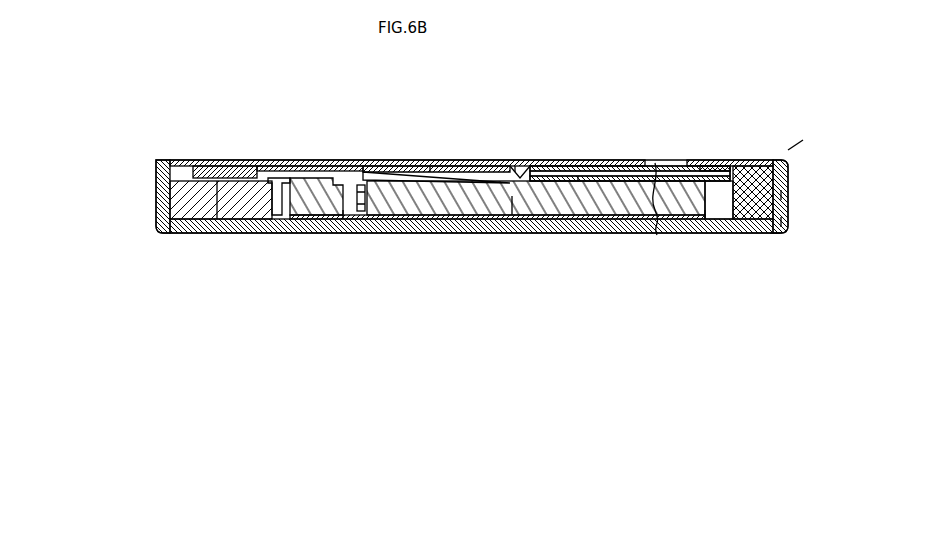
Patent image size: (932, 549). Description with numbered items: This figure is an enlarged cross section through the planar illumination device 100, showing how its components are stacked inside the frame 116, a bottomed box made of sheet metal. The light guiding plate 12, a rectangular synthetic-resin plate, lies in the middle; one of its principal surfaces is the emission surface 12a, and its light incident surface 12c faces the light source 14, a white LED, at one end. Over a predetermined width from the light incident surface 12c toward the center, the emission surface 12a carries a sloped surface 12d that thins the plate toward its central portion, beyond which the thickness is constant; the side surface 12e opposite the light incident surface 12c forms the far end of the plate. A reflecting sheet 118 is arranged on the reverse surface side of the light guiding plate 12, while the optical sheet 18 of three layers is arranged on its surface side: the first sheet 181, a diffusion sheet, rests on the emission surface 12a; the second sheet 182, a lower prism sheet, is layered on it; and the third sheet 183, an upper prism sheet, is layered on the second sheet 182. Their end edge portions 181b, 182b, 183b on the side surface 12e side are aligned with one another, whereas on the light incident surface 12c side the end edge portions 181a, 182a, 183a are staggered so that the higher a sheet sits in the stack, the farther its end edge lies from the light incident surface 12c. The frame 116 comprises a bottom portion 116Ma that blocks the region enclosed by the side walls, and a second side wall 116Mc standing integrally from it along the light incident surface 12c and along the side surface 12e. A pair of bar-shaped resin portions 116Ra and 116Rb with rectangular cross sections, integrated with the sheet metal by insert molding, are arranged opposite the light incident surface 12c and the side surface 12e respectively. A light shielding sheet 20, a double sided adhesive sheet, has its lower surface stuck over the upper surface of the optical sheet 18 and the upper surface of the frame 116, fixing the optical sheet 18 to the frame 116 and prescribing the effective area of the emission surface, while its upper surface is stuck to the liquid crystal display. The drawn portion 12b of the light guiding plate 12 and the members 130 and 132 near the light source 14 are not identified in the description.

The planar illumination device 100 is at (815, 136).
The frame 116 is at (393, 233).
The bottom portion 116Ma is at (452, 233).
The second side wall 116Mc is at (160, 195).
The resin portion 116Ra is at (193, 172).
The resin portion 116Rb is at (757, 172).
The reflecting sheet 118 is at (625, 233).
The block member 130 is at (205, 233).
The lid member 132 is at (233, 171).
The light shielding sheet 20 is at (290, 168).
The light source 14 is at (297, 213).
The light guiding plate 12 is at (512, 200).
The emission surface 12a is at (540, 172).
The substrate lower plate 12b is at (550, 220).
The light incident surface 12c is at (343, 217).
The sloped surface 12d is at (395, 175).
The side surface opposite to the light incident surface 12e is at (718, 222).
The optical sheet 18 is at (737, 57).
The first sheet 181 is at (605, 171).
The second sheet 182 is at (640, 176).
The third sheet 183 is at (672, 180).
The end edge portion 181a is at (430, 172).
The end edge portion 182a is at (515, 172).
The end edge portion 183a is at (578, 178).
The end edge portion 181b is at (775, 236).
The end edge portion 182b is at (785, 222).
The end edge portion 183b is at (784, 195).